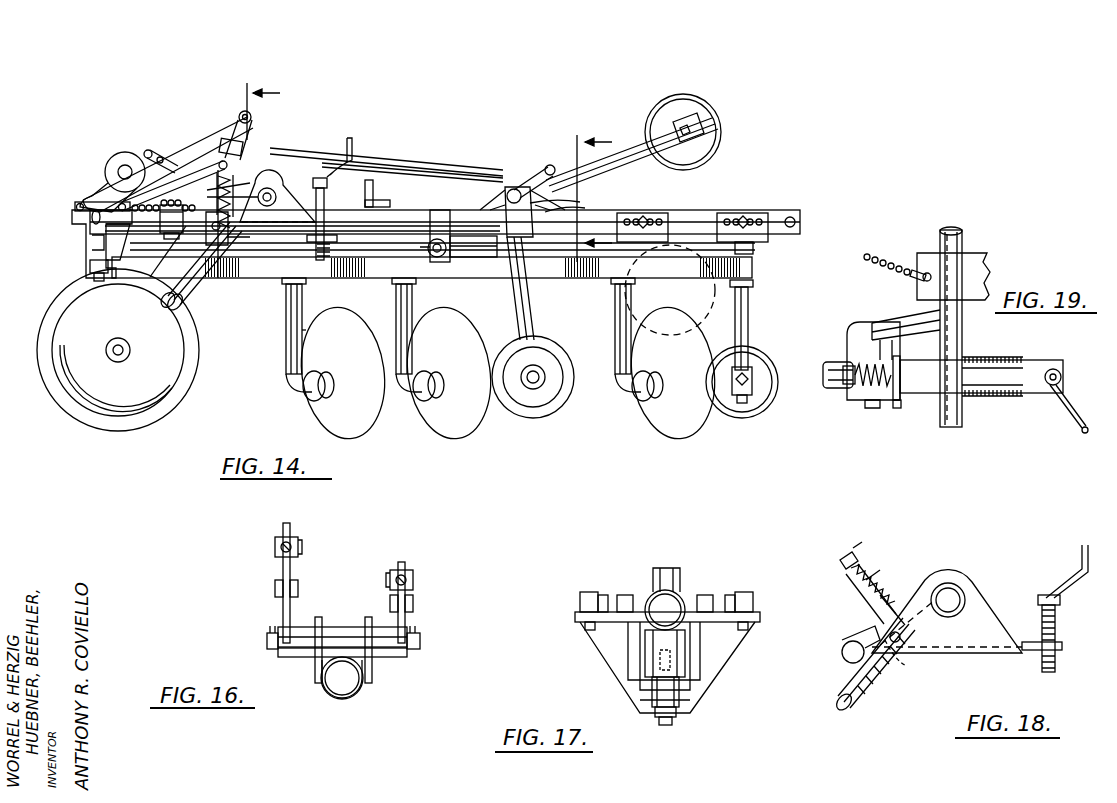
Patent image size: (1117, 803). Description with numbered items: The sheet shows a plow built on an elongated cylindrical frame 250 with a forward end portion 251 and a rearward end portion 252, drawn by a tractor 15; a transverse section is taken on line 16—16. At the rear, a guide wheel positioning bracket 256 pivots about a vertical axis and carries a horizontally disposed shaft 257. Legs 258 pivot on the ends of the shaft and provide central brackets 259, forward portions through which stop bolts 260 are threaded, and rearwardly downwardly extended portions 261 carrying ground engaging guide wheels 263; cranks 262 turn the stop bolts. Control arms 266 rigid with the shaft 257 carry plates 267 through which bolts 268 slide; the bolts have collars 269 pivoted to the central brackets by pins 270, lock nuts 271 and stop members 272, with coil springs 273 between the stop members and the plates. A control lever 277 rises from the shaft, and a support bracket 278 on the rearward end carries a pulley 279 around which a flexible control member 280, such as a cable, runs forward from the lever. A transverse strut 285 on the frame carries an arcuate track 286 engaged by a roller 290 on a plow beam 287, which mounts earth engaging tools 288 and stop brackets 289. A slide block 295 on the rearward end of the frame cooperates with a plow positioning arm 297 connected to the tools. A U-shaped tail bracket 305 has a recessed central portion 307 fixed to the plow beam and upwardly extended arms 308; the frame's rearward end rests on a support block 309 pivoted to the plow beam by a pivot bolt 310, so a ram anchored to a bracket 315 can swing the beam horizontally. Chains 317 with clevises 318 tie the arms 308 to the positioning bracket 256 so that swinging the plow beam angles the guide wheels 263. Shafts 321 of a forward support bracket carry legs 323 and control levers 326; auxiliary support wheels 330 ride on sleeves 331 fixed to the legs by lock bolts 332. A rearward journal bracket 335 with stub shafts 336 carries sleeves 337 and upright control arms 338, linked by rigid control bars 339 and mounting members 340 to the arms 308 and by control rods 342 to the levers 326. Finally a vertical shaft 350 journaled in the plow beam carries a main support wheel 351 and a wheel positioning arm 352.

In FIG. 14, the tractor 15 is at (583, 188).
In FIG. 14, the section line 16 is at (249, 174).
In FIG. 14, the elongated cylindrical frame 250 is at (461, 210).
In FIG. 16, the elongated cylindrical frame 250 is at (337, 698).
In FIG. 14, the forward end portion 251 is at (785, 212).
In FIG. 14, the rearward end portion 252 is at (90, 240).
In FIG. 17, the rearward end portion 252 is at (675, 595).
In FIG. 19, the guide wheel positioning bracket 256 is at (988, 282).
In FIG. 14, the horizontally disposed shaft 257 is at (275, 188).
In FIG. 19, the horizontally disposed shaft 257 is at (962, 245).
In FIG. 18, the horizontally disposed shaft 257 is at (952, 592).
In FIG. 14, the legs 258 is at (205, 258).
In FIG. 19, the legs 258 is at (833, 390).
In FIG. 18, the legs 258 is at (865, 700).
In FIG. 14, the central brackets 259 is at (290, 200).
In FIG. 19, the central brackets 259 is at (995, 395).
In FIG. 18, the central brackets 259 is at (978, 600).
In FIG. 14, the stop bolts 260 is at (327, 200).
In FIG. 19, the stop bolts 260 is at (1056, 370).
In FIG. 18, the stop bolts 260 is at (1052, 672).
In FIG. 14, the rearwardly downwardly extended portions 261 is at (185, 308).
In FIG. 18, the rearwardly downwardly extended portions 261 is at (841, 708).
In FIG. 19, the cranks 262 is at (1084, 434).
In FIG. 18, the cranks 262 is at (1095, 535).
In FIG. 14, the ground engaging guide wheels 263 is at (128, 393).
In FIG. 14, the control arms 266 is at (208, 247).
In FIG. 19, the control arms 266 is at (870, 345).
In FIG. 18, the control arms 266 is at (845, 660).
In FIG. 14, the plates 267 is at (230, 235).
In FIG. 19, the plates 267 is at (882, 330).
In FIG. 18, the plates 267 is at (875, 615).
In FIG. 19, the bolts 268 is at (850, 386).
In FIG. 18, the bolts 268 is at (845, 560).
In FIG. 19, the collars 269 is at (900, 385).
In FIG. 18, the collars 269 is at (917, 666).
In FIG. 14, the pins 270 is at (222, 232).
In FIG. 19, the pins 270 is at (897, 408).
In FIG. 18, the pins 270 is at (897, 645).
In FIG. 19, the lock nuts 271 is at (870, 408).
In FIG. 18, the lock nuts 271 is at (858, 556).
In FIG. 18, the stop members 272 is at (872, 578).
In FIG. 14, the coil springs 273 is at (262, 182).
In FIG. 18, the coil springs 273 is at (882, 598).
In FIG. 14, the control lever 277 is at (262, 125).
In FIG. 14, the support bracket 278 is at (100, 195).
In FIG. 14, the pulley 279 is at (112, 165).
In FIG. 14, the elongated flexible control member 280 is at (158, 150).
In FIG. 14, the elongated transverse strut 285 is at (415, 280).
In FIG. 14, the arcuate track 286 is at (500, 280).
In FIG. 14, the plow beam 287 is at (682, 291).
In FIG. 17, the plow beam 287 is at (645, 712).
In FIG. 14, the earth engaging tools 288 is at (450, 430).
In FIG. 14, the stop brackets 289 is at (305, 298).
In FIG. 14, the roller 290 is at (447, 240).
In FIG. 14, the slide block 295 is at (150, 277).
In FIG. 14, the plow positioning arm 297 is at (312, 292).
In FIG. 14, the upright tail bracket 305 is at (72, 225).
In FIG. 17, the upright tail bracket 305 is at (733, 665).
In FIG. 17, the recessed central portion 307 is at (680, 705).
In FIG. 17, the upwardly extended arms 308 is at (735, 645).
In FIG. 14, the support block 309 is at (90, 255).
In FIG. 17, the support block 309 is at (650, 660).
In FIG. 14, the pivot bolt 310 is at (80, 283).
In FIG. 17, the pivot bolt 310 is at (664, 727).
In FIG. 14, the bracket 315 is at (405, 205).
In FIG. 14, the chains 317 is at (160, 170).
In FIG. 19, the chains 317 is at (867, 255).
In FIG. 19, the clevises 318 is at (917, 270).
In FIG. 17, the clevises 318 is at (624, 594).
In FIG. 14, the shafts 321 is at (545, 170).
In FIG. 14, the legs 323 is at (573, 200).
In FIG. 14, the individual control levers 326 is at (510, 185).
In FIG. 14, the auxiliary ground engaging support wheels 330 is at (533, 418).
In FIG. 14, the sleeves 331 is at (688, 118).
In FIG. 14, the lock bolts 332 is at (680, 128).
In FIG. 16, the rearward journal bracket 335 is at (378, 660).
In FIG. 14, the stub shafts 336 is at (168, 306).
In FIG. 16, the stub shafts 336 is at (268, 645).
In FIG. 16, the sleeves 337 is at (310, 660).
In FIG. 14, the control arms 338 is at (175, 203).
In FIG. 16, the control arms 338 is at (283, 565).
In FIG. 14, the rigid control bars 339 is at (180, 235).
In FIG. 16, the rigid control bars 339 is at (275, 590).
In FIG. 17, the rigid control bars 339 is at (603, 592).
In FIG. 14, the mounting members 340 is at (80, 218).
In FIG. 17, the mounting members 340 is at (585, 592).
In FIG. 14, the elongated rigid control rods 342 is at (380, 165).
In FIG. 16, the elongated rigid control rods 342 is at (275, 547).
In FIG. 14, the vertically disposed shaft 350 is at (748, 315).
In FIG. 14, the main support wheel 351 is at (770, 360).
In FIG. 14, the wheel positioning arm 352 is at (745, 242).